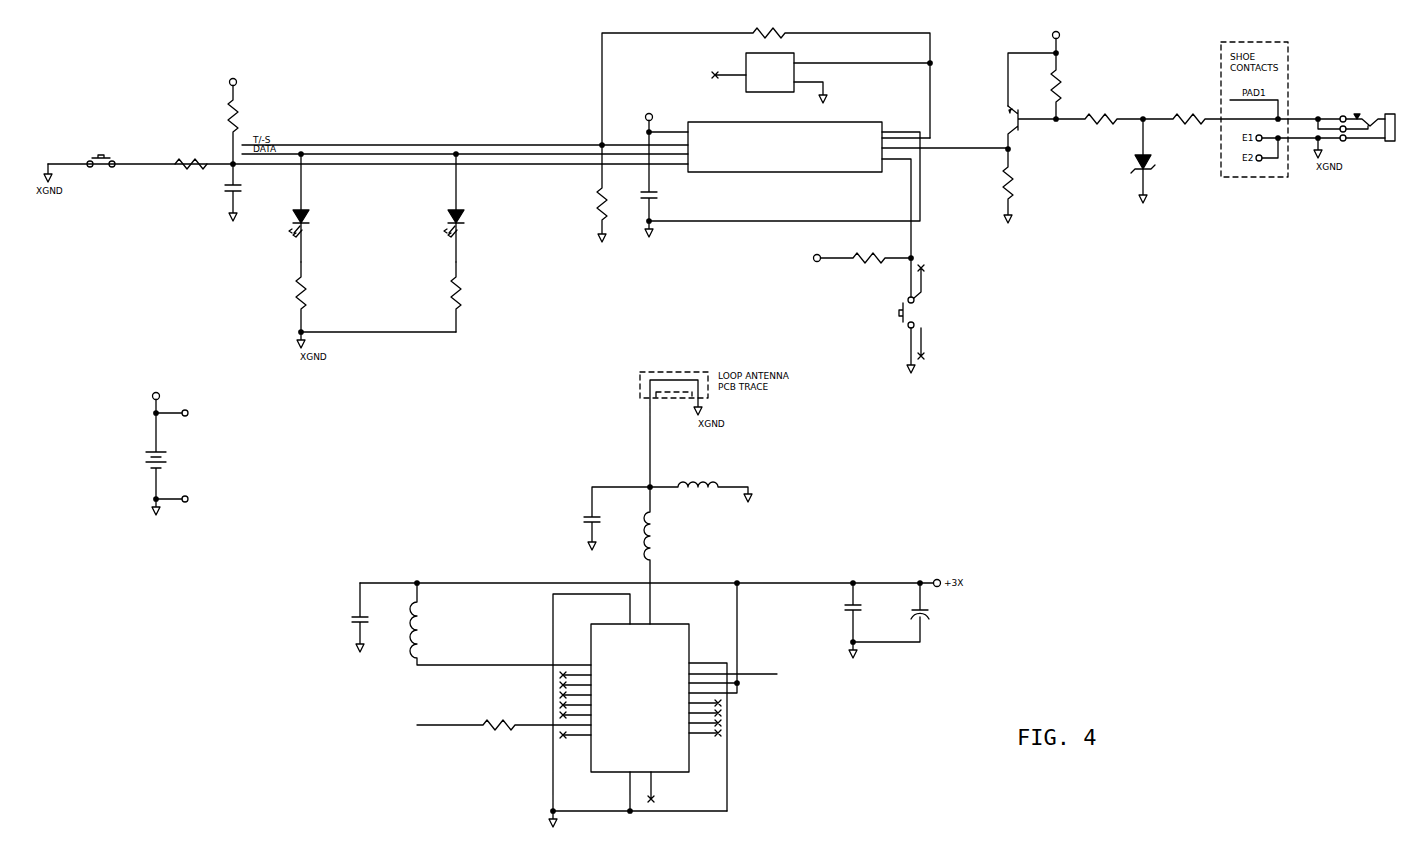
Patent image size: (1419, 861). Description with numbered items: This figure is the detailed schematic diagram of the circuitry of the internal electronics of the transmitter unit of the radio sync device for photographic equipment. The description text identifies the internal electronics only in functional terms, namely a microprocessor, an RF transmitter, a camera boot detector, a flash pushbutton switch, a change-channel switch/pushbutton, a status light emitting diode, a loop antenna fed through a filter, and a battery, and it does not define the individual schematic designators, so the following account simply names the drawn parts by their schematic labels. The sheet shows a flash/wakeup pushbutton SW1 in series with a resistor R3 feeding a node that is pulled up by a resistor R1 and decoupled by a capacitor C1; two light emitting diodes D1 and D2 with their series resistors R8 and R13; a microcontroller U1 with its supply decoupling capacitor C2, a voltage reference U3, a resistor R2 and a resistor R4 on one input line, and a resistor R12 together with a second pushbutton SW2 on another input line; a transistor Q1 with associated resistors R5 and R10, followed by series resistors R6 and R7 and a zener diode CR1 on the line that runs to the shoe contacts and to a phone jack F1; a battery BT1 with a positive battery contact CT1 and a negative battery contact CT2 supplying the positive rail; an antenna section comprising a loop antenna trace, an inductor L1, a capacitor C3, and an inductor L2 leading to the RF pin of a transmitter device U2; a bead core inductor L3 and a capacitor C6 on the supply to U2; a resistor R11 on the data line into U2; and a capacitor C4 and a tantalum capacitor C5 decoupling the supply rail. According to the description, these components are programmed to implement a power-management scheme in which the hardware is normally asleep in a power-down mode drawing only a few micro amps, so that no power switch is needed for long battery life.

The flash/wakeup switch SW1 is at (110, 142).
The resistor 1K R3 is at (190, 148).
The resistor 100K R1 is at (248, 117).
The capacitor .1uF C1 is at (247, 198).
The green LED D1 is at (367, 207).
The resistor 499 ohm R8 is at (323, 297).
The green LED D2 is at (523, 207).
The resistor 499 ohm R13 is at (478, 297).
The resistor 10K R2 is at (765, 74).
The resistor 100K R4 is at (615, 202).
The voltage reference ZRC250F03 U3 is at (822, 78).
The microcontroller PIC12LC671 U1 is at (824, 180).
The capacitor .1uF C2 is at (664, 189).
The resistor 100K R12 is at (855, 245).
The pushbutton switch SW2 is at (861, 323).
The PNP transistor FMMT3906 Q1 is at (1013, 85).
The resistor 100K R5 is at (1070, 87).
The resistor 100K R10 is at (1021, 192).
The resistor 10K R6 is at (1099, 105).
The resistor 10K R7 is at (1240, 105).
The zener diode 8.2V CR1 is at (1170, 168).
The 2.5mm phone jack F1 is at (1363, 109).
The battery BR1232 BT1 is at (205, 455).
The positive battery contact CT1 is at (239, 422).
The negative battery contact CT2 is at (241, 509).
The inductor 220nH L1 is at (732, 482).
The capacitor 3.9pF C3 is at (617, 526).
The inductor 56nH L2 is at (720, 555).
The capacitor 100pF C6 is at (380, 624).
The bead core inductor L3 is at (500, 623).
The resistor 2.7K R11 is at (504, 712).
The transmitter TX5000 U2 is at (663, 710).
The capacitor 100pF C4 is at (873, 626).
The tantalum capacitor 10uF C5 is at (960, 612).